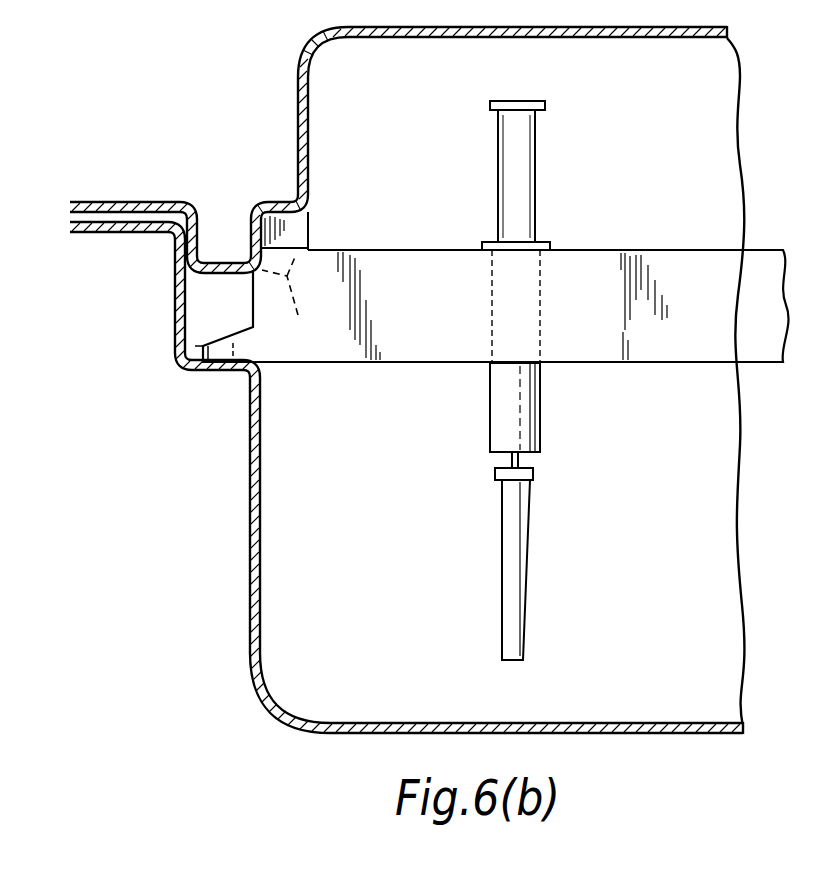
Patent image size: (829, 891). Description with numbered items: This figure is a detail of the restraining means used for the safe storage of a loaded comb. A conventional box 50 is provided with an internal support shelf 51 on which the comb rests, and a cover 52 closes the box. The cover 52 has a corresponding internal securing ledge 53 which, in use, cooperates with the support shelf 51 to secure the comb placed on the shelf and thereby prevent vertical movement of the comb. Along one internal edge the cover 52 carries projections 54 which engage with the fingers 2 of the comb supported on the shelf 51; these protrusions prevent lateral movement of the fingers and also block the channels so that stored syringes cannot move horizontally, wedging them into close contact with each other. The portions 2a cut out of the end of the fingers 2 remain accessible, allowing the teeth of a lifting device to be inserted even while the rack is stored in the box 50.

The finger 2 is at (667, 268).
The aperture 2a is at (253, 297).
The box 50 is at (250, 600).
The support shelf 51 is at (221, 378).
The cover 52 is at (298, 108).
The securing ledge 53 is at (222, 247).
The projection 54 is at (298, 300).